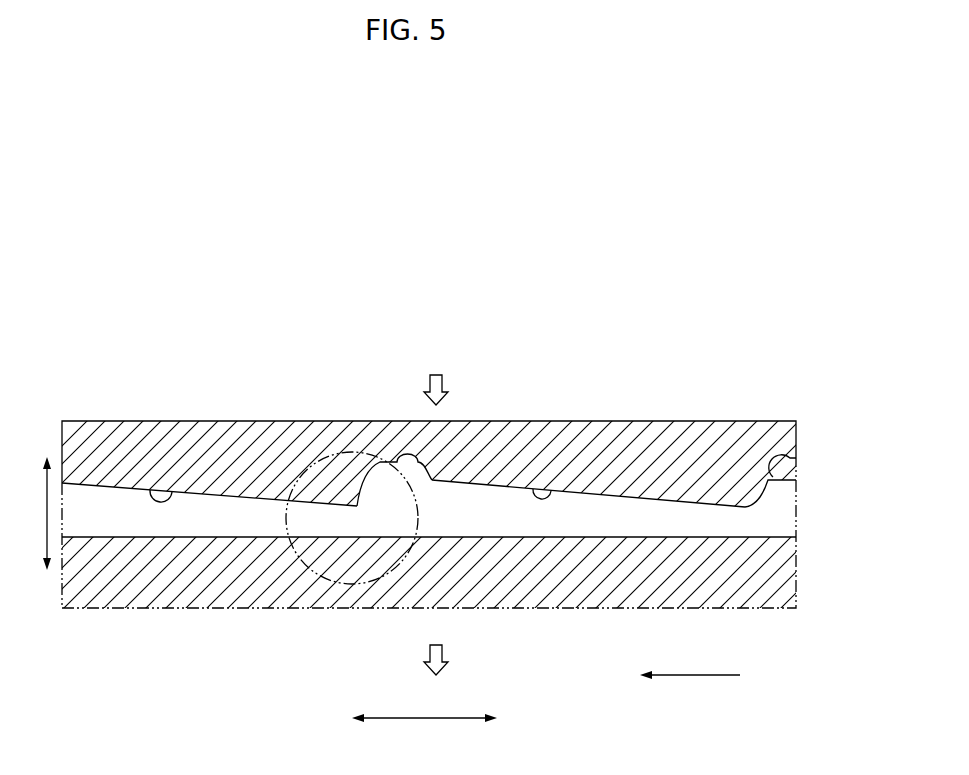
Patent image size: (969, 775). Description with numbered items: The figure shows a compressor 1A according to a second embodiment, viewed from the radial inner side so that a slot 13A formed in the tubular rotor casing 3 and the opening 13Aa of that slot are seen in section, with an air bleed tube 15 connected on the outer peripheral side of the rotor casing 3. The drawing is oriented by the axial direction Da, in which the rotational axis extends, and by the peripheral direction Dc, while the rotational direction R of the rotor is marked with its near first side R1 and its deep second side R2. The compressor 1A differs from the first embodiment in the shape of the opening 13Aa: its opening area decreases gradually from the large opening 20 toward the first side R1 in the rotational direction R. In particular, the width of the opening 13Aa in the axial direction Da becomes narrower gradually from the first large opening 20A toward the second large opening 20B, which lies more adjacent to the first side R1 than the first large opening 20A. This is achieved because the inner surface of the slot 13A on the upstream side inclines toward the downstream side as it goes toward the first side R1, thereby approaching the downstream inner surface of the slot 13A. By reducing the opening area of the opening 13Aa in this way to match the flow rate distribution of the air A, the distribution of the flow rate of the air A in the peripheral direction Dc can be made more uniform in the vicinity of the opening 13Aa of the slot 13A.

The compressor 1A is at (644, 377).
The rotor casing 3 is at (240, 432).
The slot 13A is at (764, 524).
The opening 13Aa is at (150, 495).
The air bleed tube 15 is at (349, 572).
The large opening 20 is at (567, 422).
The first large opening 20A is at (397, 458).
The second large opening 20B is at (772, 466).
The axial direction Da is at (62, 483).
The peripheral direction Dc is at (458, 716).
The air A is at (440, 382).
The rotational direction R is at (690, 677).
The first side R1 is at (735, 677).
The second side R2 is at (654, 677).